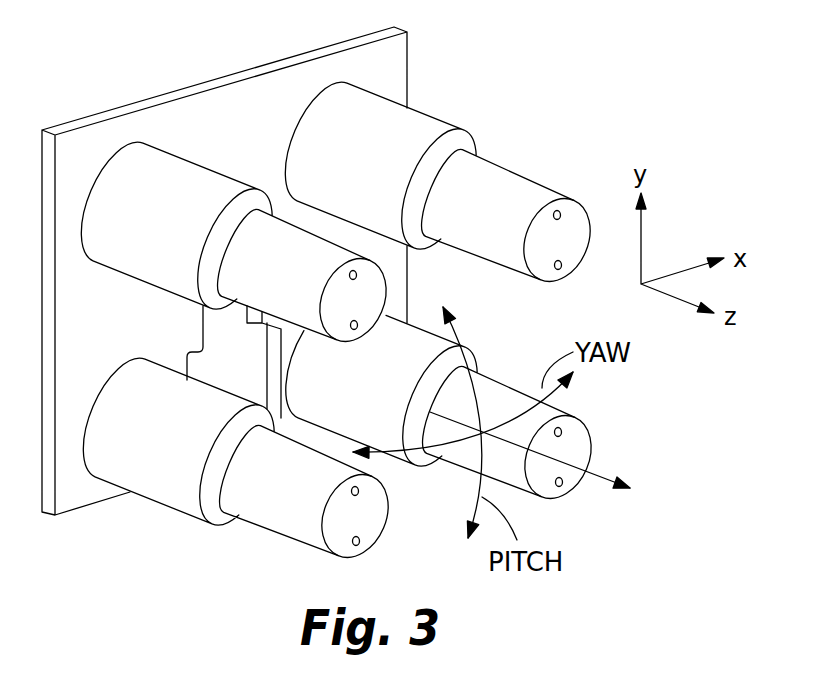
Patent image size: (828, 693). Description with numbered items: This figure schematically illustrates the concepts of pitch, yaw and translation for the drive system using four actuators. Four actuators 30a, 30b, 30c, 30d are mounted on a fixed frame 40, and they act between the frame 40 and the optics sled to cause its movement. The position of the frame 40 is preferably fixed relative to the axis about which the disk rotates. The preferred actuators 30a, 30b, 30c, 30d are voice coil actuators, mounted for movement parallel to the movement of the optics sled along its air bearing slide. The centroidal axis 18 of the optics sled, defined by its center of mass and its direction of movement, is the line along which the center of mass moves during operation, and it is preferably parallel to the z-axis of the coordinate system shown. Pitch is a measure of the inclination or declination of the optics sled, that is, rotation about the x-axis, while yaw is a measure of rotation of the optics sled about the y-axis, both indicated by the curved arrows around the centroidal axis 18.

The fixed frame 40 is at (393, 58).
The actuator 30a is at (147, 157).
The actuator 30b is at (422, 128).
The actuator 30c is at (477, 352).
The actuator 30d is at (163, 493).
The centroidal axis 18 is at (597, 473).